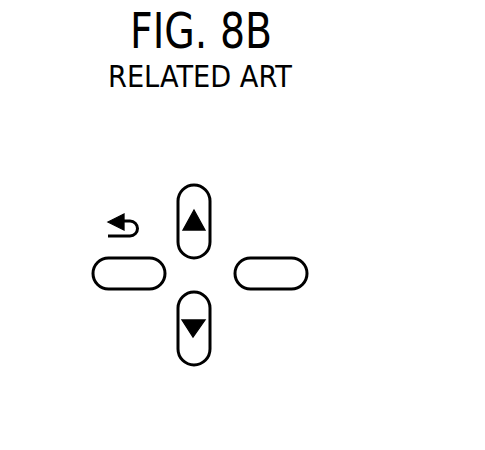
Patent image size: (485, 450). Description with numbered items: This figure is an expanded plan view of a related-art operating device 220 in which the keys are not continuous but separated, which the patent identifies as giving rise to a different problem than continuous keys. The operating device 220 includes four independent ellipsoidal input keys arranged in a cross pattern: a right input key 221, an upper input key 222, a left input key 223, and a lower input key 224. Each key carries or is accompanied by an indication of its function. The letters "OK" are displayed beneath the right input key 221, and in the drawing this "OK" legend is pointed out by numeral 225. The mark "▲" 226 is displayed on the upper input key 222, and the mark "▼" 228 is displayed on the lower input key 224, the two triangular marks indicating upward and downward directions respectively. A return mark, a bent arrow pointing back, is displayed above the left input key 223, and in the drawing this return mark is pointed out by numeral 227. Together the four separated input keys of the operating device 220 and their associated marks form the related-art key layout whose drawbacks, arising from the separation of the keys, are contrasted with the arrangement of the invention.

The operating device 220 is at (268, 175).
The right input key 221 is at (290, 272).
The upper input key 222 is at (198, 199).
The left input key 223 is at (108, 273).
The lower input key 224 is at (187, 347).
The OK key 225 is at (306, 221).
The mark "▲" 226 is at (192, 220).
The back key 227 is at (123, 205).
The mark "▼" 228 is at (205, 328).